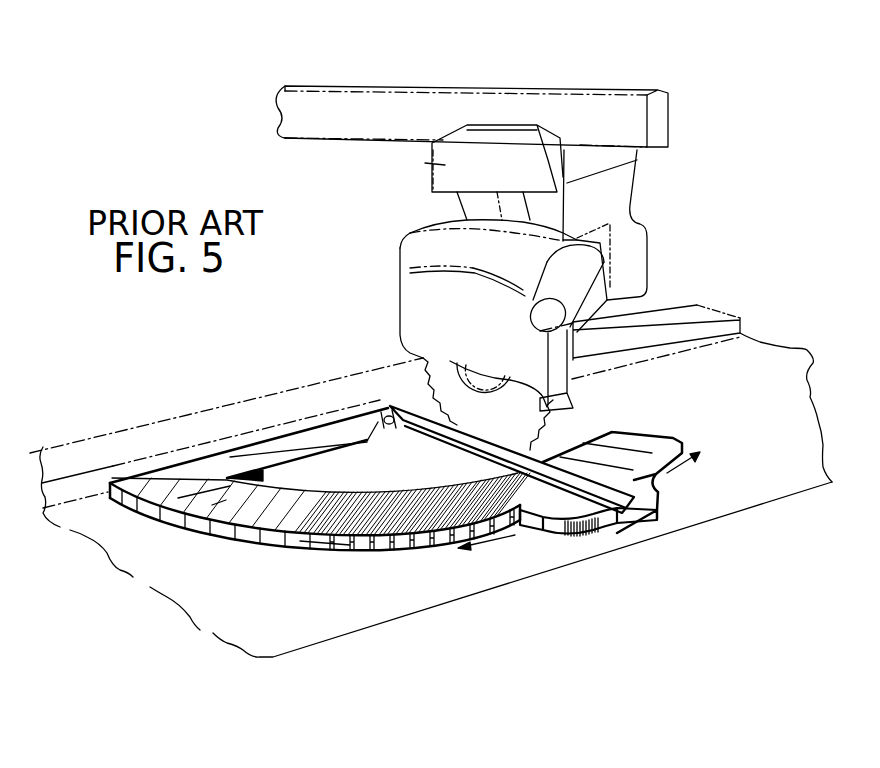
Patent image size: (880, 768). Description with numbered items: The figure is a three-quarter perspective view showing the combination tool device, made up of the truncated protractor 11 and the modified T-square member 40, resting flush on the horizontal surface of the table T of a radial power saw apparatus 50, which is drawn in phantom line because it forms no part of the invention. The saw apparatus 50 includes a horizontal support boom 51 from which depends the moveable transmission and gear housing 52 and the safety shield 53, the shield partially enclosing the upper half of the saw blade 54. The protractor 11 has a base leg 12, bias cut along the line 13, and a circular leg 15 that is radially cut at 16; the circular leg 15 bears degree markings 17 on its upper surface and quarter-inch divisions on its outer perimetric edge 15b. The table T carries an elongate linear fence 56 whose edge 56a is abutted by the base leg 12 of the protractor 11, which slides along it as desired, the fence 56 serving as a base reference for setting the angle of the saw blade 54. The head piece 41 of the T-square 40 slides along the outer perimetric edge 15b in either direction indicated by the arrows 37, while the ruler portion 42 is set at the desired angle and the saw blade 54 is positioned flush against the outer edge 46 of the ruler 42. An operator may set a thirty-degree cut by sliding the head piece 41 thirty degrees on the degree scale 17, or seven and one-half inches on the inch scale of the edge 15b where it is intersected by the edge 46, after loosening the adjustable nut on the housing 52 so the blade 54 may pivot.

The truncated protractor 11 is at (237, 540).
The base leg 12 is at (290, 447).
The bias cut line 13 is at (374, 440).
The circular leg 15 is at (176, 500).
The outer perimetric edge 15b is at (330, 542).
The radial cut 16 is at (640, 433).
The degree markings 17 is at (224, 504).
The arrows 37 is at (683, 462).
The modified T-square member 40 is at (650, 522).
The head piece 41 is at (577, 512).
The ruler portion 42 is at (441, 428).
The outer edge 46 is at (547, 440).
The radial power saw apparatus 50 is at (697, 184).
The horizontal support boom 51 is at (400, 107).
The transmission and gear housing 52 is at (440, 165).
The safety shield 53 is at (398, 300).
The saw blade 54 is at (575, 404).
The elongate linear fence 56 is at (146, 444).
The fence edge 56a is at (70, 487).
The table T is at (775, 374).